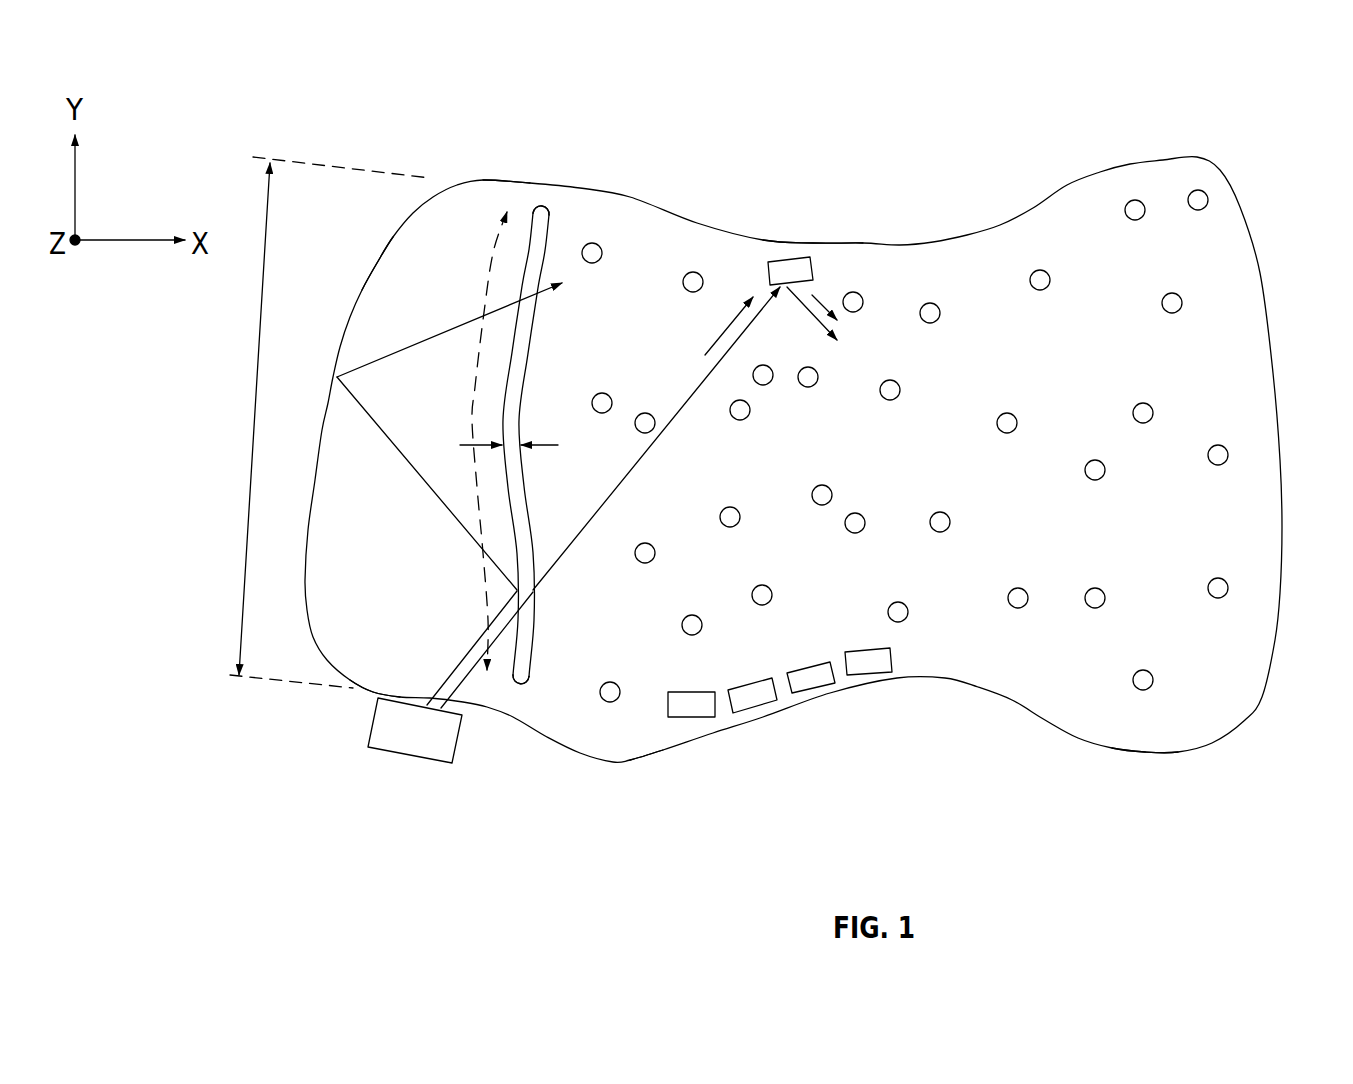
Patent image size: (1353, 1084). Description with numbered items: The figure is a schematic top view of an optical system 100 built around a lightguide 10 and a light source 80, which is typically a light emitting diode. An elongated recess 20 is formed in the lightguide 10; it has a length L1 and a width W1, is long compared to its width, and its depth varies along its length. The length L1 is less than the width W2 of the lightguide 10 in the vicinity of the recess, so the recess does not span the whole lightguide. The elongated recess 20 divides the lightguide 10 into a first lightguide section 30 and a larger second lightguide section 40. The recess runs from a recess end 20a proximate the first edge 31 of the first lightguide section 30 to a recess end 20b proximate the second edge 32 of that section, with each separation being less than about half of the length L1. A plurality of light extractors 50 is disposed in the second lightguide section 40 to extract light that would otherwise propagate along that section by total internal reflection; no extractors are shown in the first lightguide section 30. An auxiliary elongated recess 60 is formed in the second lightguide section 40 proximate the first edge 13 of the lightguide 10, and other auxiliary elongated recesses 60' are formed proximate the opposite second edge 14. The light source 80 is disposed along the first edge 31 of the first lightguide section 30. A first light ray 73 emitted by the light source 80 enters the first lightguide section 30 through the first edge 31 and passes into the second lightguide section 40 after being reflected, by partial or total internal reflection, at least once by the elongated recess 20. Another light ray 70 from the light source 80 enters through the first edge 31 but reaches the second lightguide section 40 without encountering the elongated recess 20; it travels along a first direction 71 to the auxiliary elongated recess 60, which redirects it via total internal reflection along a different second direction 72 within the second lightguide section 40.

The optical system 100 is at (1270, 90).
The lightguide 10 is at (1258, 708).
The first edge 13 is at (809, 242).
The second edge 14 is at (717, 737).
The elongated recess 20 is at (550, 240).
The recess end 20a is at (519, 686).
The recess end 20b is at (544, 207).
The first lightguide section 30 is at (368, 285).
The first edge 31 is at (406, 694).
The second edge 32 is at (502, 181).
The second lightguide section 40 is at (1158, 742).
The light extractors 50 is at (1172, 303).
The auxiliary elongated recess 60 is at (782, 236).
The auxiliary elongated recess 60' is at (780, 716).
The light ray 70 is at (550, 570).
The first direction 71 is at (722, 333).
The second direction 72 is at (813, 297).
The first light ray 73 is at (413, 470).
The light source 80 is at (373, 723).
The length L1 is at (486, 295).
The width W1 is at (519, 447).
The width W2 is at (252, 425).